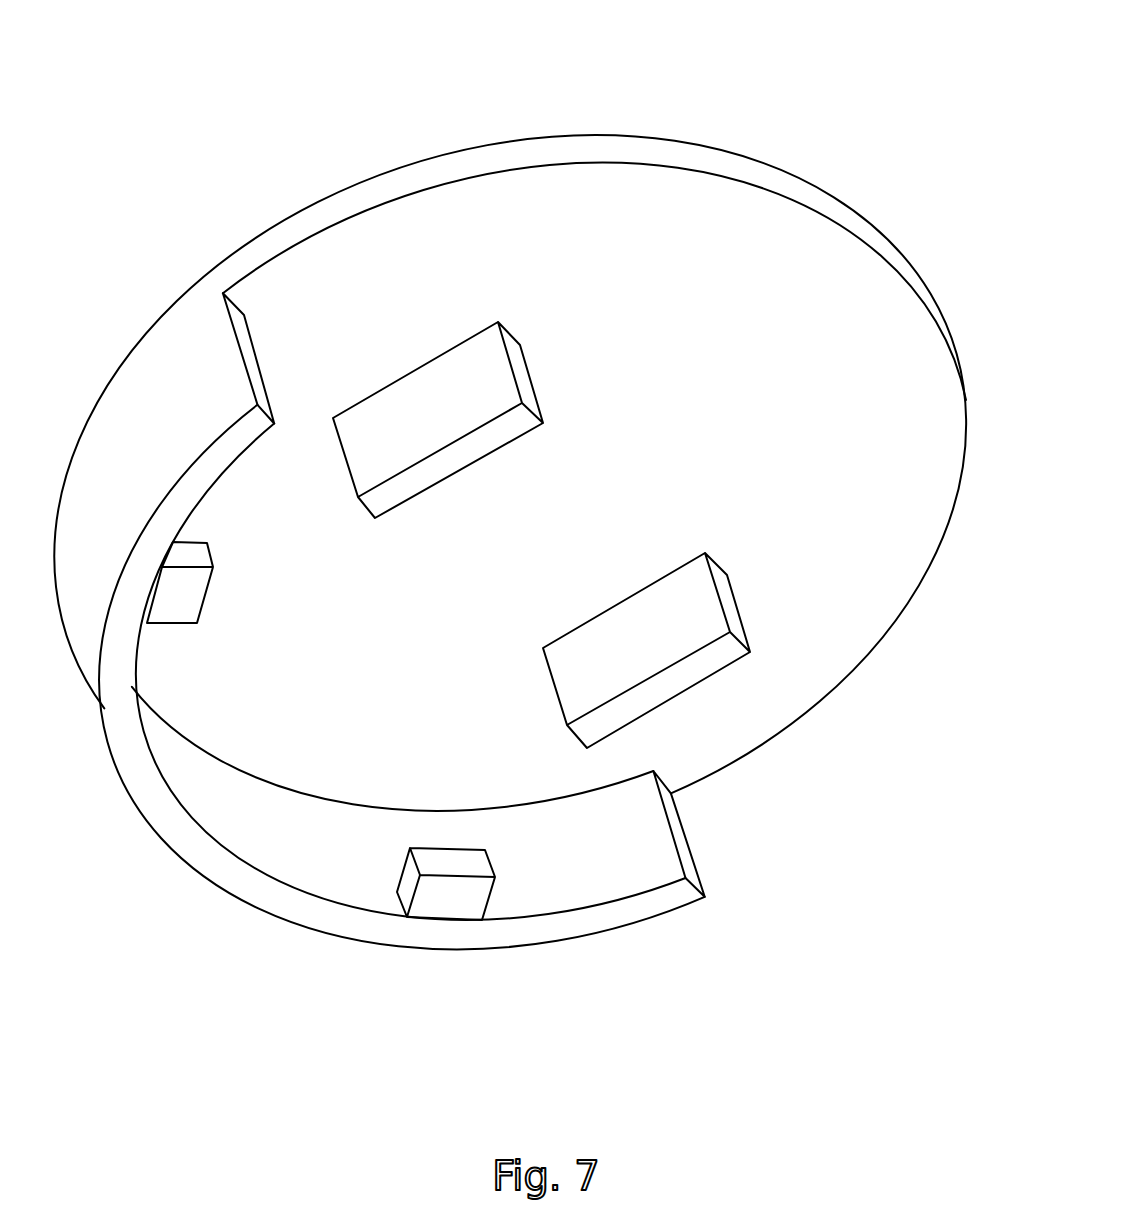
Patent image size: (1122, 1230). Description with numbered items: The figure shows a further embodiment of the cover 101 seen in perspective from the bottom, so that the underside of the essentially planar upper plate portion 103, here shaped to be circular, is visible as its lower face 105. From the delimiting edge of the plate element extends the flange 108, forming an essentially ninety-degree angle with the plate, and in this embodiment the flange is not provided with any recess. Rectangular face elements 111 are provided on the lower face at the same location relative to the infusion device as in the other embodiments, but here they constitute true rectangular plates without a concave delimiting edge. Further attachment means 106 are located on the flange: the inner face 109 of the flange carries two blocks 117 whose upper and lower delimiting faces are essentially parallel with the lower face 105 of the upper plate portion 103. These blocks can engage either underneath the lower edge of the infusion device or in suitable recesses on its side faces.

The cover 101 is at (669, 106).
The upper plate portion 103 is at (352, 203).
The lower face 105 is at (852, 603).
The projections 106 is at (458, 457).
The flange 108 is at (201, 857).
The inner face 109 is at (277, 843).
The ribs 111 is at (667, 602).
The blocks 117 is at (438, 858).